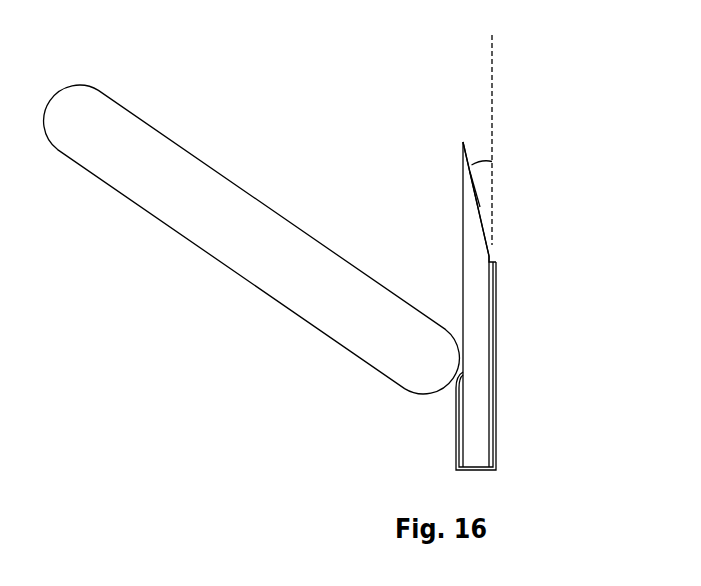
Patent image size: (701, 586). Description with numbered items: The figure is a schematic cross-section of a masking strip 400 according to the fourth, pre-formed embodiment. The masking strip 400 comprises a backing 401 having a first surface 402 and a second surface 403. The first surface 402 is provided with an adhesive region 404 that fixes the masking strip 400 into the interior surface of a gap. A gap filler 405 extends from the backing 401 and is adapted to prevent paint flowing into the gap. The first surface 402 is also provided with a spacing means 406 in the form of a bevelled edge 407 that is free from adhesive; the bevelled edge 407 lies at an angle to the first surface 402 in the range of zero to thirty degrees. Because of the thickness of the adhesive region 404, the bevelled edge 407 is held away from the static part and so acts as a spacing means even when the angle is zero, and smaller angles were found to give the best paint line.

The masking strip 400 is at (538, 58).
The backing 401 is at (478, 238).
The first surface 402 is at (490, 254).
The second surface 403 is at (463, 268).
The adhesive region 404 is at (496, 392).
The gap filler 405 is at (278, 290).
The spacing means 406 is at (473, 131).
The bevelled edge 407 is at (480, 207).